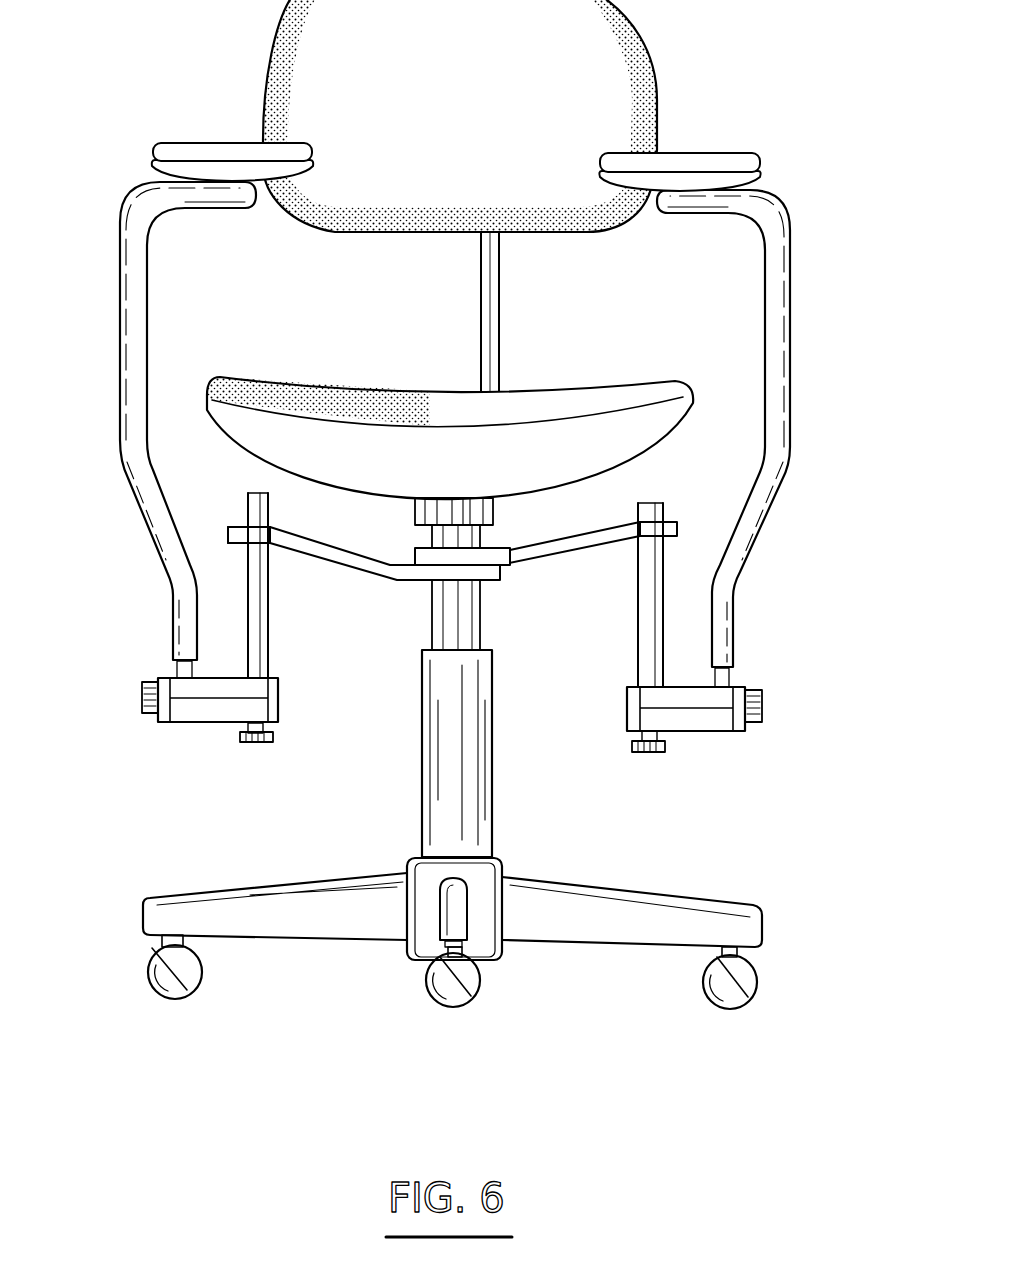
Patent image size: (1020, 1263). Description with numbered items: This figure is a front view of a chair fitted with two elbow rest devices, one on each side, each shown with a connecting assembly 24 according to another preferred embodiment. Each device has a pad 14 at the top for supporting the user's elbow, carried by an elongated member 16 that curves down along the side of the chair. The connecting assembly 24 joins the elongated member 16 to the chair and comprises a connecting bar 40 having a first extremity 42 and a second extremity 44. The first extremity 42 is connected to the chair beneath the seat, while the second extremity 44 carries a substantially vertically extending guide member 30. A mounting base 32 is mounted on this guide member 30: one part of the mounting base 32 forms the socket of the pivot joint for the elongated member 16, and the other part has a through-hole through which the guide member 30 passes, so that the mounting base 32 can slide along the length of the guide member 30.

The pad 14 is at (215, 143).
The elongated member 16 is at (120, 298).
The connecting assembly 24 is at (452, 657).
The guide member 30 is at (268, 652).
The mounting base 32 is at (215, 713).
The connecting bar 40 is at (459, 557).
The first extremity 42 is at (443, 555).
The second extremity 44 is at (240, 530).